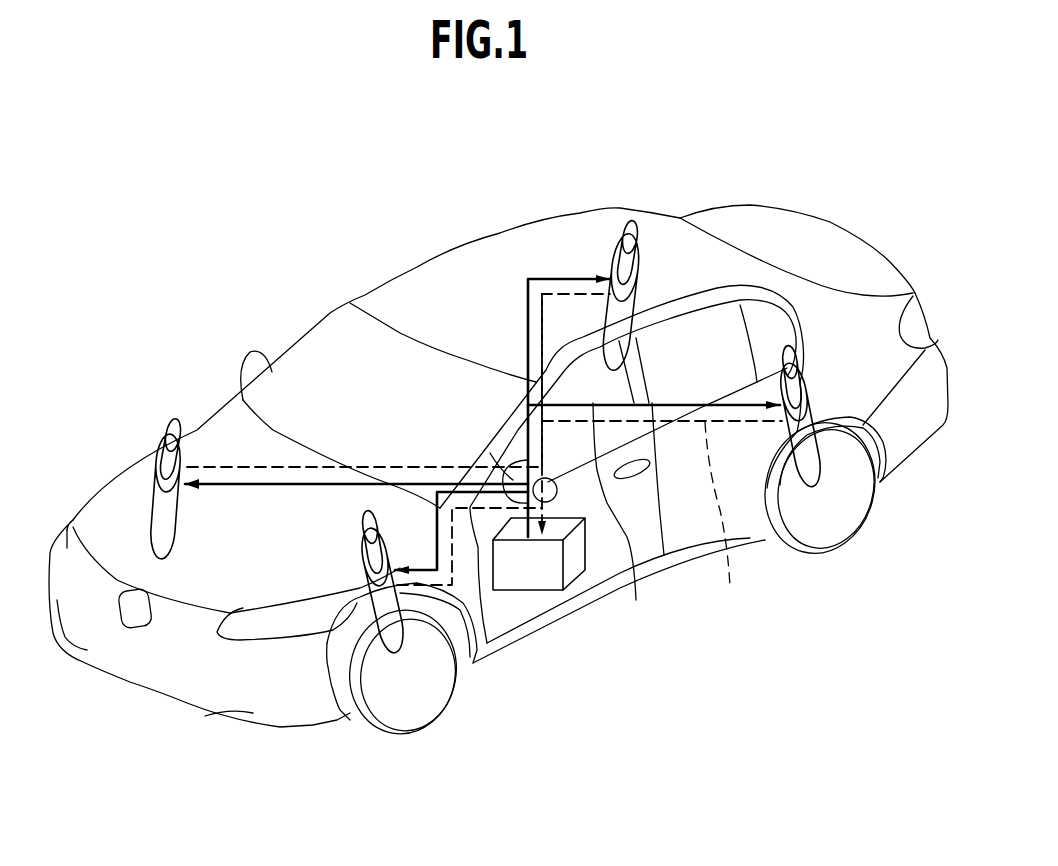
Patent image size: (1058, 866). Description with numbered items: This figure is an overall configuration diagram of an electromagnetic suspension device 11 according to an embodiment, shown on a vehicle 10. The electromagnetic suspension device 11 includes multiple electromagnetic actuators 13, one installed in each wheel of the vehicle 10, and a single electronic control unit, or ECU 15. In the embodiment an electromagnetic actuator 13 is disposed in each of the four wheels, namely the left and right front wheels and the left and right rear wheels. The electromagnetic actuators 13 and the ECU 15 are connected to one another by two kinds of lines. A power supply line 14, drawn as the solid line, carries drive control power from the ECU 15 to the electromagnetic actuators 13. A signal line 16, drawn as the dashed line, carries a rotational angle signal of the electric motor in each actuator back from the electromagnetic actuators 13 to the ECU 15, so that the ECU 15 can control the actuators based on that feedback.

The vehicle 10 is at (467, 242).
The electromagnetic suspension device 11 is at (460, 430).
The electromagnetic actuator 13 is at (147, 502).
The power supply line 14 is at (636, 600).
The electronic control unit (ECU) 15 is at (527, 592).
The signal line 16 is at (727, 521).